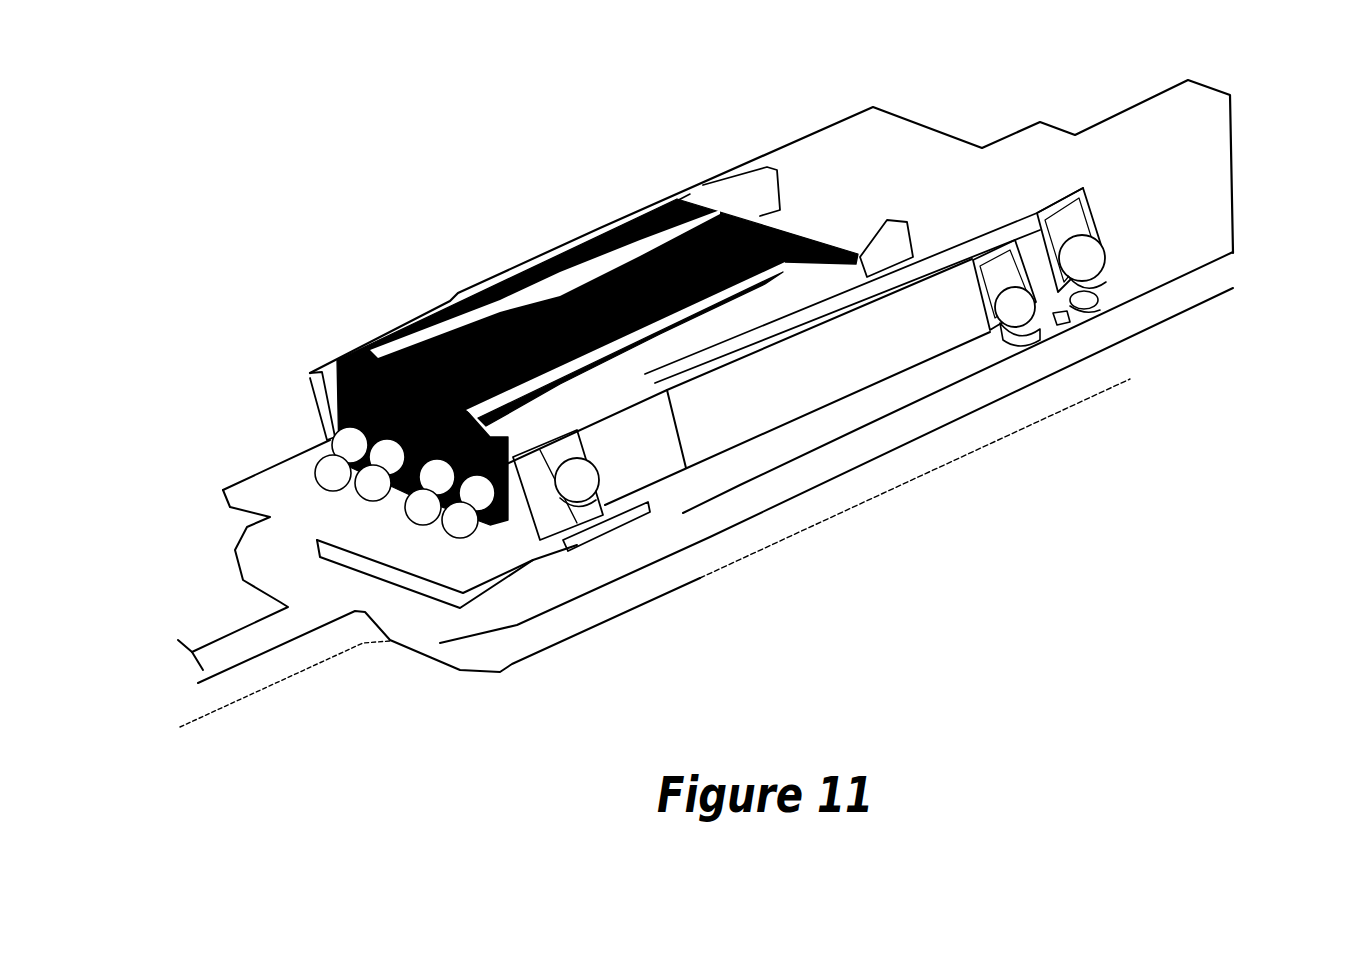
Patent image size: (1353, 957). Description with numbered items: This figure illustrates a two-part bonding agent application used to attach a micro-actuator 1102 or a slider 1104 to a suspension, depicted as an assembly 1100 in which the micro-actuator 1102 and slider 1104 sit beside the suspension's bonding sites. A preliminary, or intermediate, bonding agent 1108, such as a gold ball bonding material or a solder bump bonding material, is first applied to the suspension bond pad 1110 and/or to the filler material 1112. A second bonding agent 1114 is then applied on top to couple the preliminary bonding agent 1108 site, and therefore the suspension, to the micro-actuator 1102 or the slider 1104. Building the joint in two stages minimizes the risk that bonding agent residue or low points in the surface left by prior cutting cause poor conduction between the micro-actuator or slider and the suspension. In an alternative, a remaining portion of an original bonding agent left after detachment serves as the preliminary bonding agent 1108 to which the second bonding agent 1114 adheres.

The printed circuit board 1100 is at (826, 443).
The micro-actuator 1102 is at (835, 140).
The slider 1104 is at (583, 275).
The preliminary bonding agent 1108 is at (1116, 302).
The suspension bond pad 1110 is at (1104, 331).
The filler material 1112 is at (1114, 314).
The second bonding agent 1114 is at (1097, 269).